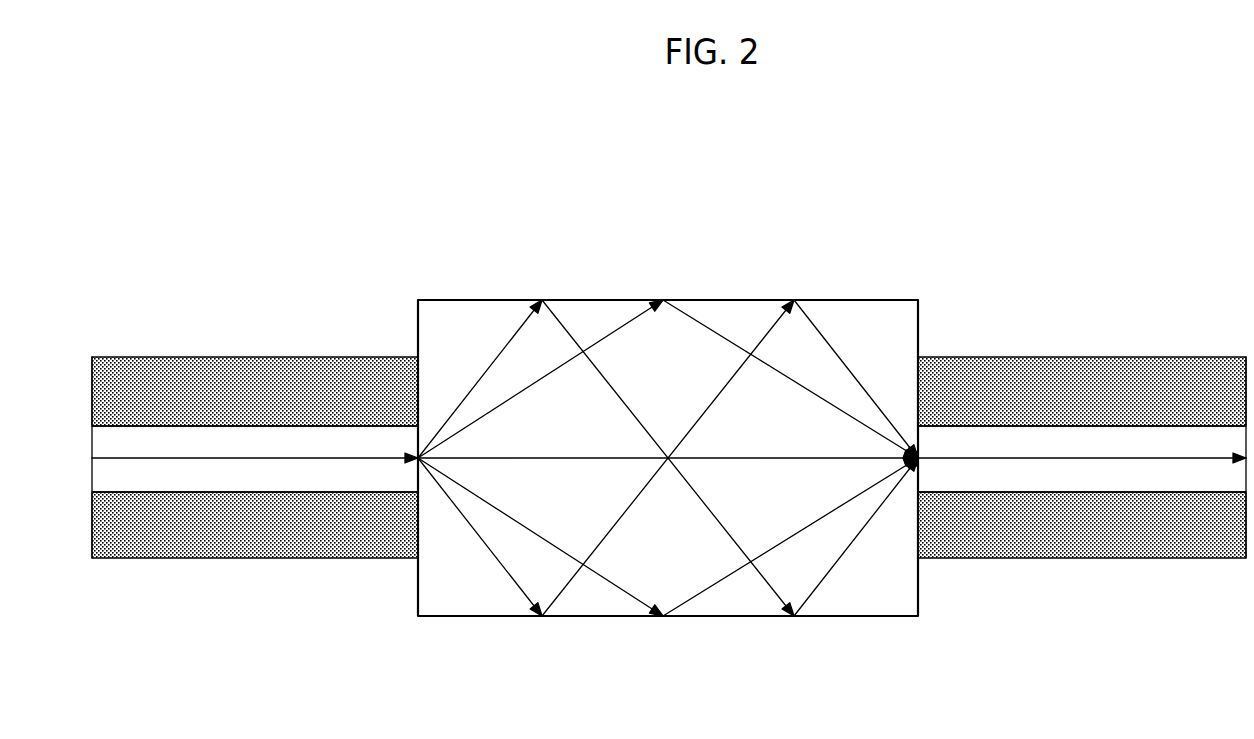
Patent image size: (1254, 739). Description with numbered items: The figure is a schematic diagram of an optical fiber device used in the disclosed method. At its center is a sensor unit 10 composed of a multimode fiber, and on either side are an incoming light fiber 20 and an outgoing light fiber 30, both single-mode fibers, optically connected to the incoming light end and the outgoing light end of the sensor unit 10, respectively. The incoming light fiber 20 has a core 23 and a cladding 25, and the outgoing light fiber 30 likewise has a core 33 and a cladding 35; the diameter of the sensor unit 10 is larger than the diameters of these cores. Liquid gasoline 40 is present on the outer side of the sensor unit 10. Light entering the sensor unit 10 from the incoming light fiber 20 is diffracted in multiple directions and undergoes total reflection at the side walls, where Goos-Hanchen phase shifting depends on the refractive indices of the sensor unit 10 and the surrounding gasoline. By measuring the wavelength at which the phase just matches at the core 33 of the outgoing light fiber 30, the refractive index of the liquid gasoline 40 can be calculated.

The sensor unit 10 is at (888, 323).
The liquid gasoline 40 is at (741, 268).
The incoming light fiber 20 is at (255, 536).
The core 23 is at (140, 472).
The cladding 25 is at (265, 530).
The outgoing light fiber 30 is at (1082, 535).
The core 33 is at (987, 475).
The cladding 35 is at (1110, 530).